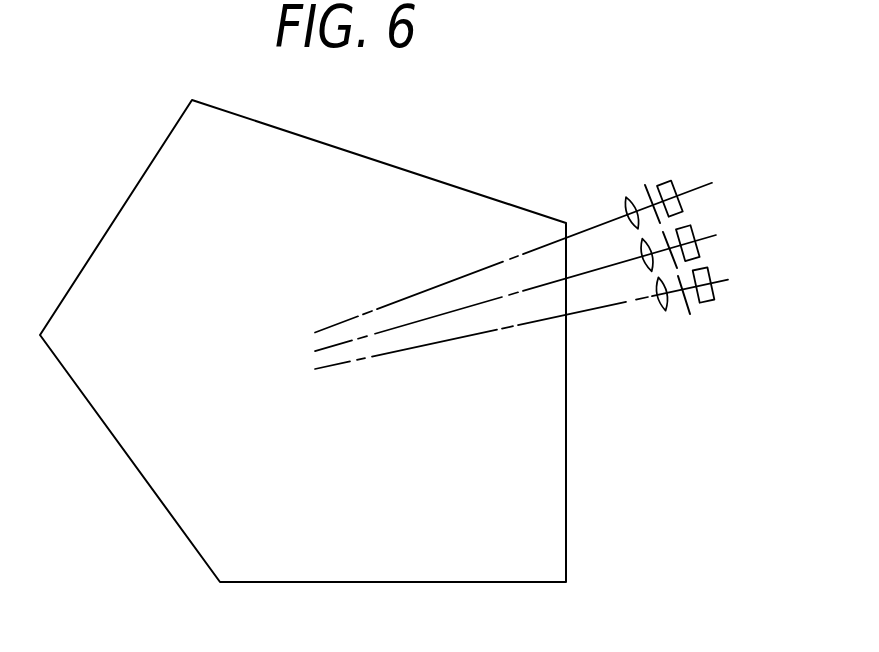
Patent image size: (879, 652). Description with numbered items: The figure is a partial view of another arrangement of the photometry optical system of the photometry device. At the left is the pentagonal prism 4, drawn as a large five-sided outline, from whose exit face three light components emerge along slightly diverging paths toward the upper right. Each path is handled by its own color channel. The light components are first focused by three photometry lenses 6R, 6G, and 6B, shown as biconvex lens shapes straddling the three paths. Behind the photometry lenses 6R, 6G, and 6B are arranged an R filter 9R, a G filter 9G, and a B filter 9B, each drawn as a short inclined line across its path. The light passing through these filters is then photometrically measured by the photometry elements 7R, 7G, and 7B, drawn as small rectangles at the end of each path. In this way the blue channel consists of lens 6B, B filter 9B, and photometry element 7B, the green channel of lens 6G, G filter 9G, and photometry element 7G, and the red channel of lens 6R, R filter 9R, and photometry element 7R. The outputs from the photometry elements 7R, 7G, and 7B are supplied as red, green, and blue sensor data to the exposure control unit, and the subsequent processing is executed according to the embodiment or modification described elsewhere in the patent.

The pentagonal prism 4 is at (333, 163).
The photometry lens 6B is at (622, 207).
The B filter 9B is at (652, 185).
The photometry element 7B is at (682, 183).
The photometry lens 6G is at (650, 273).
The G filter 9G is at (674, 232).
The photometry element 7G is at (703, 257).
The photometry lens 6R is at (665, 312).
The R filter 9R is at (689, 316).
The photometry element 7R is at (716, 300).